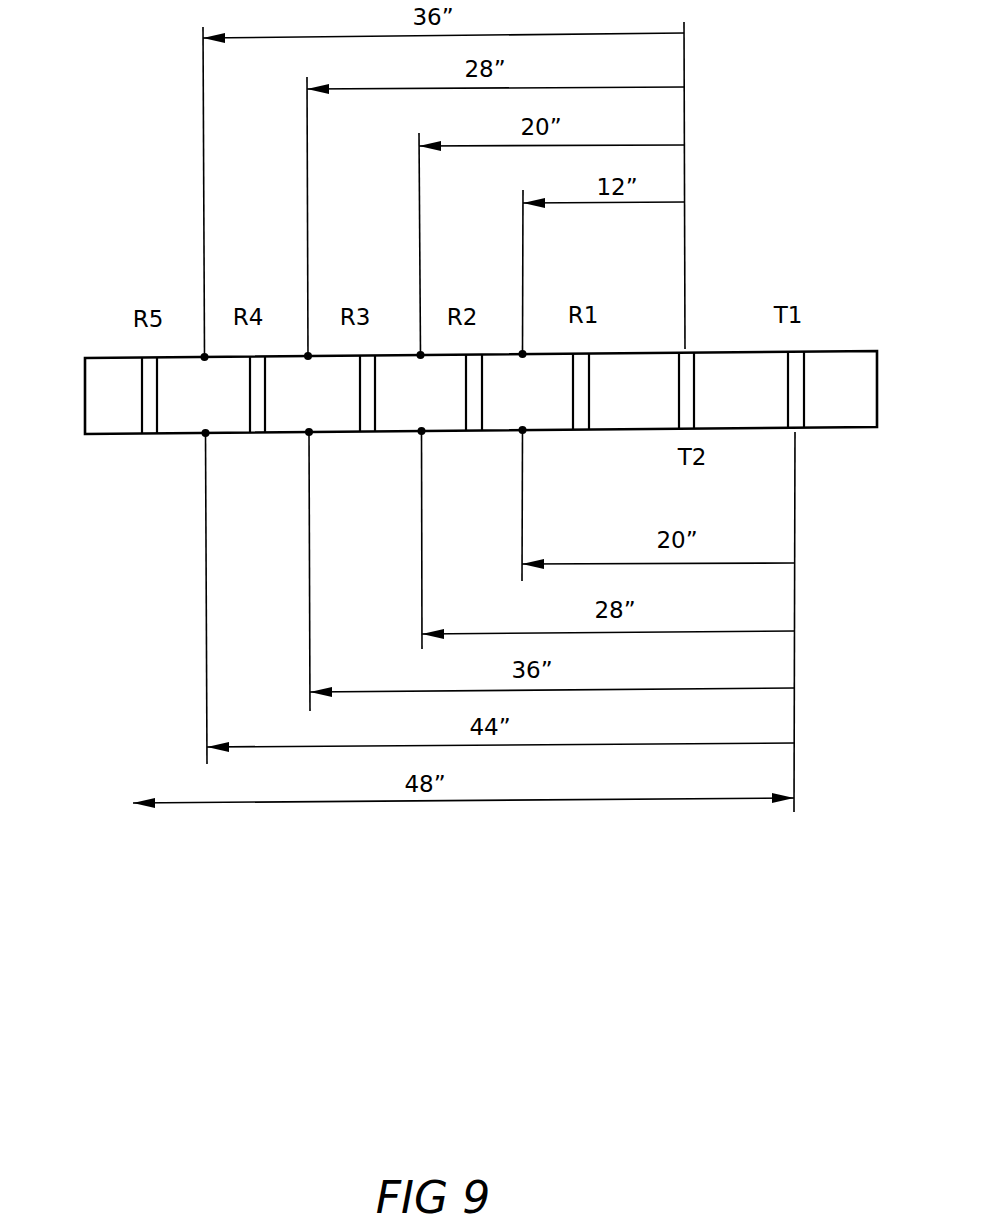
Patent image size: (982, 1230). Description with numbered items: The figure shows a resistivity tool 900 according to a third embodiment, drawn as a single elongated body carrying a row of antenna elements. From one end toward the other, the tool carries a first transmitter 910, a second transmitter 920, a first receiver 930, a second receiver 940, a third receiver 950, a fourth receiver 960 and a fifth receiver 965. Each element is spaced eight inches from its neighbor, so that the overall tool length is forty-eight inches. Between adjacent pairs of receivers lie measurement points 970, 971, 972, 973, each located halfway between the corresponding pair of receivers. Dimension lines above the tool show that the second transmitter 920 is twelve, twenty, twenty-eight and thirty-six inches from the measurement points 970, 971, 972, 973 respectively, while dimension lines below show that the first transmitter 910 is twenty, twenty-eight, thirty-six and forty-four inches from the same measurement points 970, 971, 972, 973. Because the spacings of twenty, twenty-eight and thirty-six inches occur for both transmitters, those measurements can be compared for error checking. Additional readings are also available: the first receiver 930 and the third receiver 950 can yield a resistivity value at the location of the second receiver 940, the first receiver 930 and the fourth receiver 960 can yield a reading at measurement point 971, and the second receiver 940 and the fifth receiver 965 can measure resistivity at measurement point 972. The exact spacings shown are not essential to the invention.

The tool 900 is at (136, 146).
The first transmitter T1 910 is at (798, 430).
The second transmitter T2 920 is at (692, 347).
The first receiver R1 930 is at (580, 432).
The second receiver R2 940 is at (482, 434).
The third receiver R3 950 is at (363, 435).
The fourth receiver R4 960 is at (255, 436).
The fifth receiver R5 965 is at (150, 436).
The measurement point 970 is at (514, 341).
The measurement point 971 is at (412, 342).
The measurement point 972 is at (298, 342).
The measurement point 973 is at (199, 342).